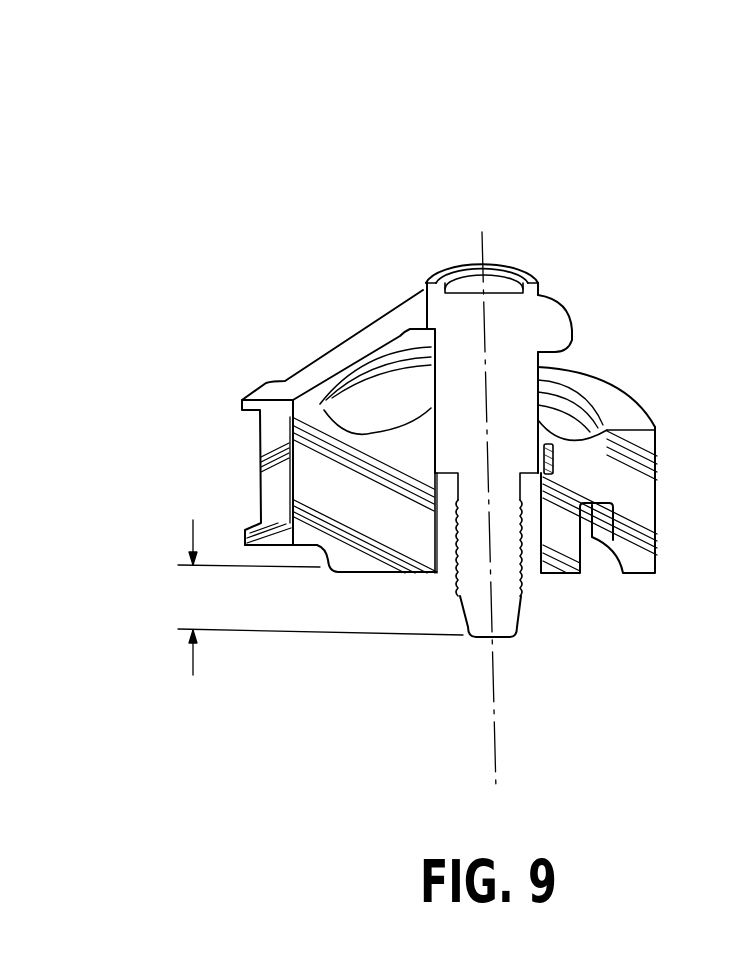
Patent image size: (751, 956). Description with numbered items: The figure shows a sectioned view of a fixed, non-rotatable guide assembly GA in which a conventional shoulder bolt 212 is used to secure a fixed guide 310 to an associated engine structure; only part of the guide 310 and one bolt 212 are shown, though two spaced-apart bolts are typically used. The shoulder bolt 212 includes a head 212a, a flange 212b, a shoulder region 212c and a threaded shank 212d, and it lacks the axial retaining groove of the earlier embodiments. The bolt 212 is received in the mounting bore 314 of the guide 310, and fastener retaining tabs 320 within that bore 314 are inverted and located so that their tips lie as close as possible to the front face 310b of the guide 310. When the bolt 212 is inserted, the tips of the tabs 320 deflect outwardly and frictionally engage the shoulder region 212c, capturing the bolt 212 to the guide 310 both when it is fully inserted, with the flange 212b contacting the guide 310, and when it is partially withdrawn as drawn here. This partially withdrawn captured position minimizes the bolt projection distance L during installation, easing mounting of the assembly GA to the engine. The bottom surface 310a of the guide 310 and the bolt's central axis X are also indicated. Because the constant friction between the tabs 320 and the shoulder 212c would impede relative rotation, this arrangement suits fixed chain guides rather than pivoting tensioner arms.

The shoulder bolt 212 is at (576, 391).
The head 212a is at (553, 300).
The flange 212b is at (567, 364).
The shoulder region 212c is at (597, 377).
The threaded shank 212d is at (523, 583).
The fastener retaining tab 320 is at (556, 443).
The guide 310 is at (414, 531).
The gasket bottom surface 310a is at (370, 575).
The front face 310b is at (420, 440).
The mounting bore 314 is at (463, 557).
The guide assembly GA is at (375, 150).
The axis X is at (495, 677).
The bolt projection distance L is at (320, 597).